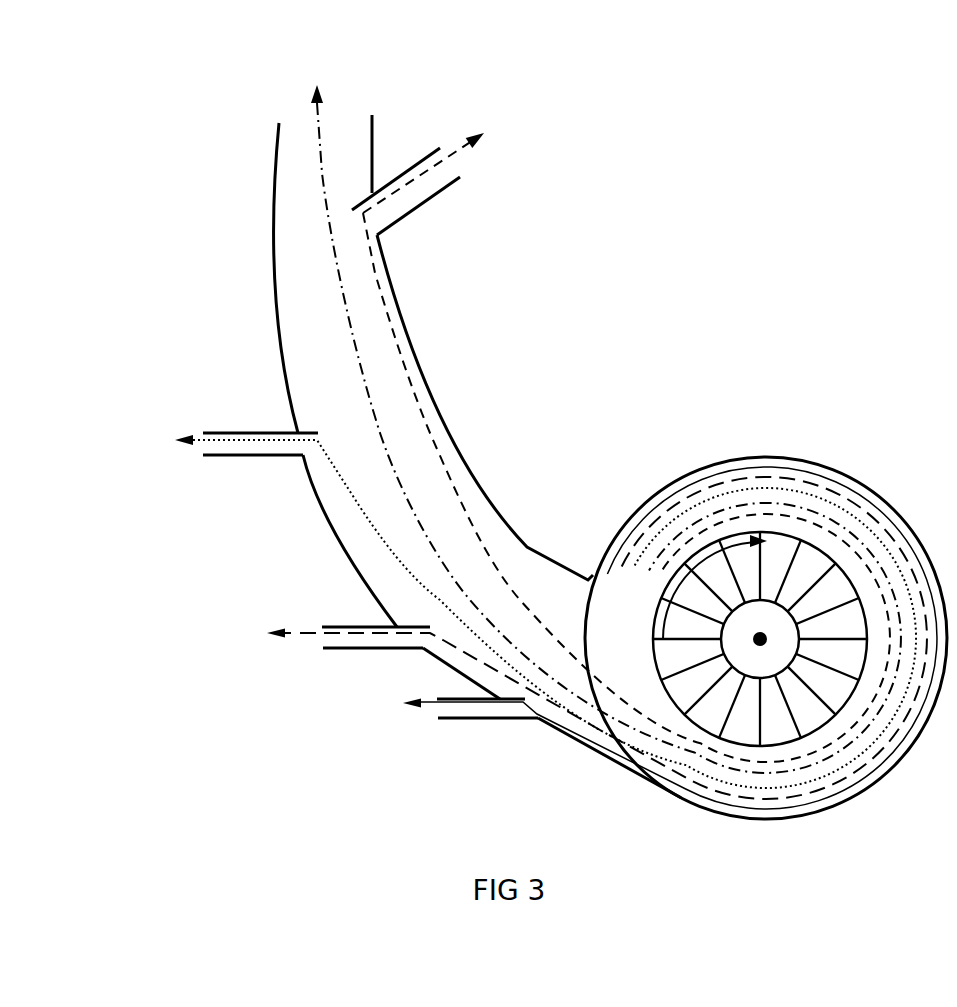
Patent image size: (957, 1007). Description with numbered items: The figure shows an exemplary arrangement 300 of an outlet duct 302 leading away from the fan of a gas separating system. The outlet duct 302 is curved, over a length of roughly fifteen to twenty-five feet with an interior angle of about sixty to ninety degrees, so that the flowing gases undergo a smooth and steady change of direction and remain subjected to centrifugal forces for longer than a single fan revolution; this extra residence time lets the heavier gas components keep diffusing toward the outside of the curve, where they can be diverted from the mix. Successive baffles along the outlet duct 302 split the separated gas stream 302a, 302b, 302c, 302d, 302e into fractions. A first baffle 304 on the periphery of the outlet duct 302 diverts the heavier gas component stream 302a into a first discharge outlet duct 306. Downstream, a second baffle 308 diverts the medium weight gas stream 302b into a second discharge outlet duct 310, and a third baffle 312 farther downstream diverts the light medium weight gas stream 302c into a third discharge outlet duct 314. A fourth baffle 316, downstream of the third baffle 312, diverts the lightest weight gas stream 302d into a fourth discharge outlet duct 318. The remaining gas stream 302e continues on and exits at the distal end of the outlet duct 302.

The blower assembly 300 is at (618, 300).
The outlet duct 302 is at (484, 490).
The heavier gas component stream 302a is at (427, 747).
The medium weight gas stream 302b is at (311, 675).
The light medium weight gas stream 302c is at (194, 481).
The lightest weight gas stream 302d is at (621, 420).
The remaining gas stream 302e is at (316, 118).
The first baffle 304 is at (522, 707).
The first discharge outlet duct 306 is at (457, 722).
The second baffle 308 is at (430, 636).
The second discharge outlet duct 310 is at (345, 652).
The third baffle 312 is at (314, 443).
The third discharge outlet duct 314 is at (232, 460).
The fourth baffle 316 is at (357, 200).
The fourth discharge outlet duct 318 is at (472, 168).